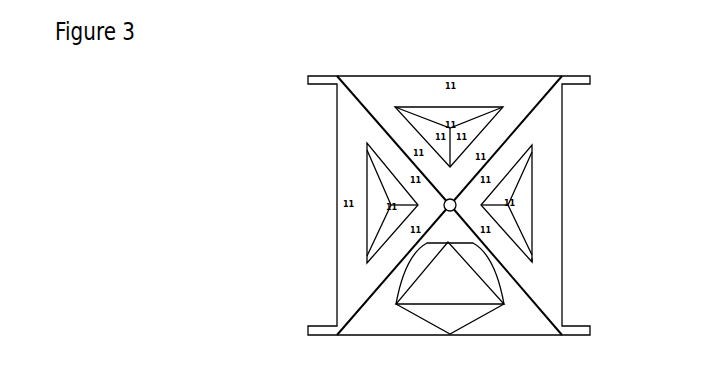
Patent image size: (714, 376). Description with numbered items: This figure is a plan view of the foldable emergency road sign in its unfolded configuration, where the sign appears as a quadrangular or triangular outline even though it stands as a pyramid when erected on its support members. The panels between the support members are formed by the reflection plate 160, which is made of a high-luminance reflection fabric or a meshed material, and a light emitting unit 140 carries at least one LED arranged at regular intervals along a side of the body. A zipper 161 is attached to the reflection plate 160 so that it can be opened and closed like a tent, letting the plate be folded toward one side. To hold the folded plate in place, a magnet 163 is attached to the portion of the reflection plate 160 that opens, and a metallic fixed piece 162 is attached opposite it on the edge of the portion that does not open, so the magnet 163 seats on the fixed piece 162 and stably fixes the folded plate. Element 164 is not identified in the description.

The reflection plate 160 is at (587, 327).
The light emitting unit 140 is at (523, 291).
The zipper 161 is at (532, 172).
The metallic fixed piece 162 is at (558, 202).
The magnet 163 is at (508, 205).
The panel base 164 is at (552, 270).